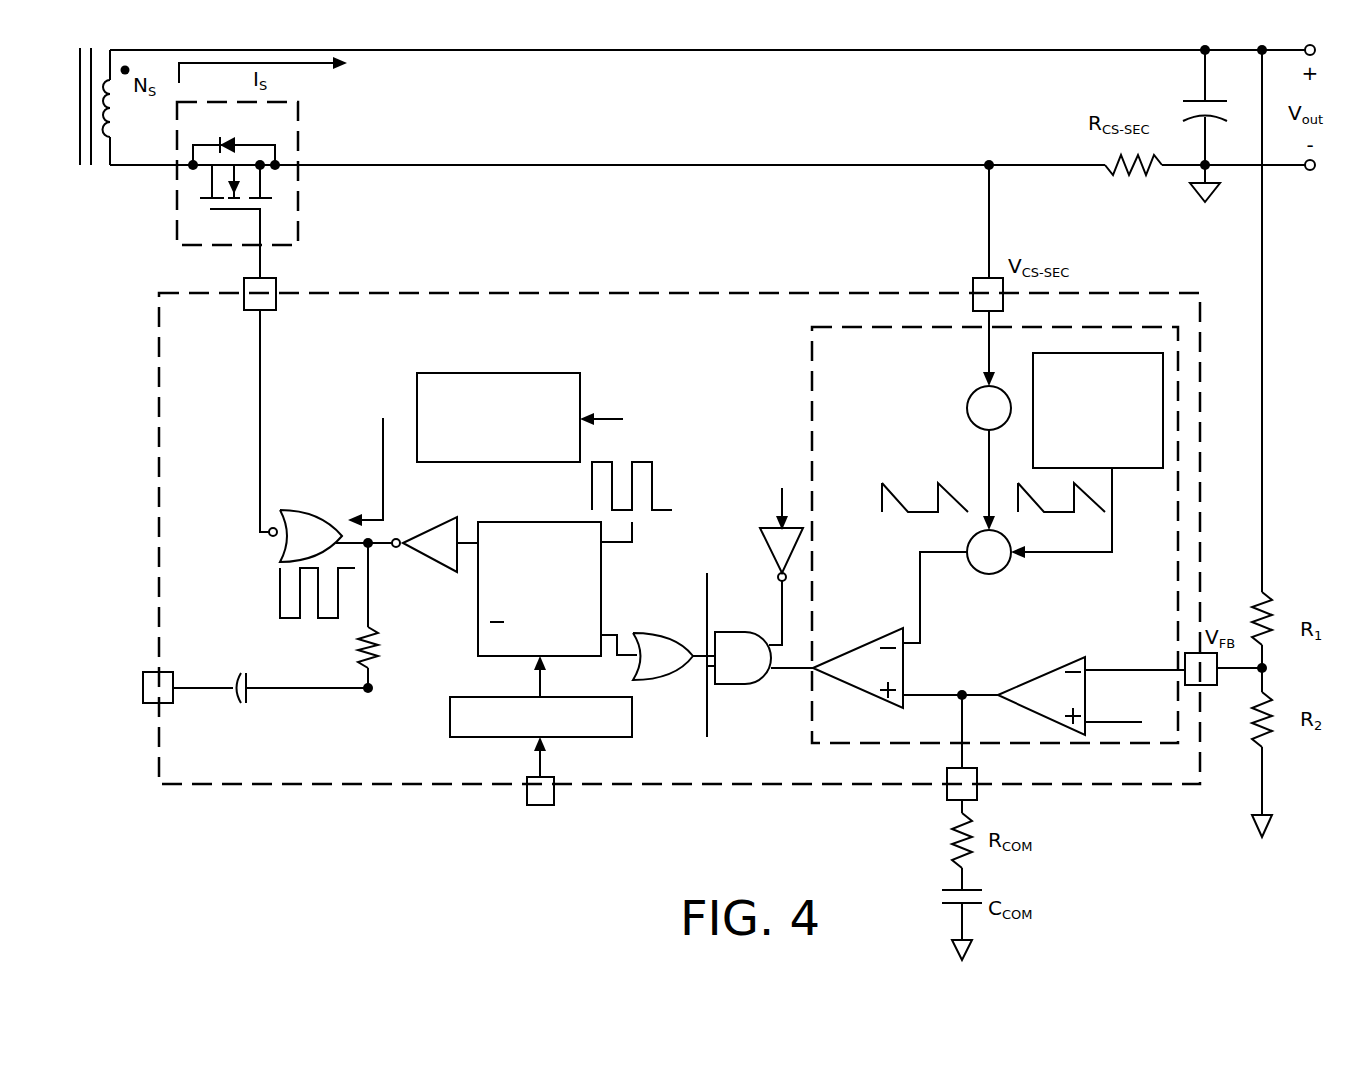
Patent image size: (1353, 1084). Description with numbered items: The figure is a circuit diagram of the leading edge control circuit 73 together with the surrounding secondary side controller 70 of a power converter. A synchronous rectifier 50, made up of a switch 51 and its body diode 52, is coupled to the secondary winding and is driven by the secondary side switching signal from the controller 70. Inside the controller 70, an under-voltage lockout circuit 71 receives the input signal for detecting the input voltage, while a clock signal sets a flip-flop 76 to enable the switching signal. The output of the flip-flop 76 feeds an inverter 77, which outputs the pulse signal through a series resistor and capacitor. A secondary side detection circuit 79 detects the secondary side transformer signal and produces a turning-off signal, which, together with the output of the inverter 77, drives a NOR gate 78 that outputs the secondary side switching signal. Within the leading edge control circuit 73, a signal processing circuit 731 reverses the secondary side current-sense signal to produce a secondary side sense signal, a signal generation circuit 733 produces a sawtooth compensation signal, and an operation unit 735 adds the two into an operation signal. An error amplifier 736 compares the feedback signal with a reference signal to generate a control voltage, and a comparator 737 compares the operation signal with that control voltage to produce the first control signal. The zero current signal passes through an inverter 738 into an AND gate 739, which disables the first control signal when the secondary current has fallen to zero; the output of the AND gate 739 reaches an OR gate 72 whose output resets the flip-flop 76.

The synchronous rectifier 50 is at (259, 190).
The switch 51 is at (236, 221).
The body diode 52 is at (234, 139).
The secondary side controller 70 is at (671, 525).
The under-voltage lockout circuit 71 is at (541, 705).
The OR gate 72 is at (674, 641).
The leading edge control circuit 73 is at (978, 527).
The flip-flop 76 is at (557, 571).
The inverter 77 is at (435, 529).
The NOR gate 78 is at (305, 520).
The secondary side detection circuit 79 is at (498, 401).
The signal processing circuit 731 is at (967, 408).
The signal generation circuit 733 is at (1098, 429).
The operation unit 735 is at (991, 570).
The error amplifier 736 is at (1091, 688).
The comparator 737 is at (858, 661).
The inverter 738 is at (763, 553).
The AND gate 739 is at (764, 640).